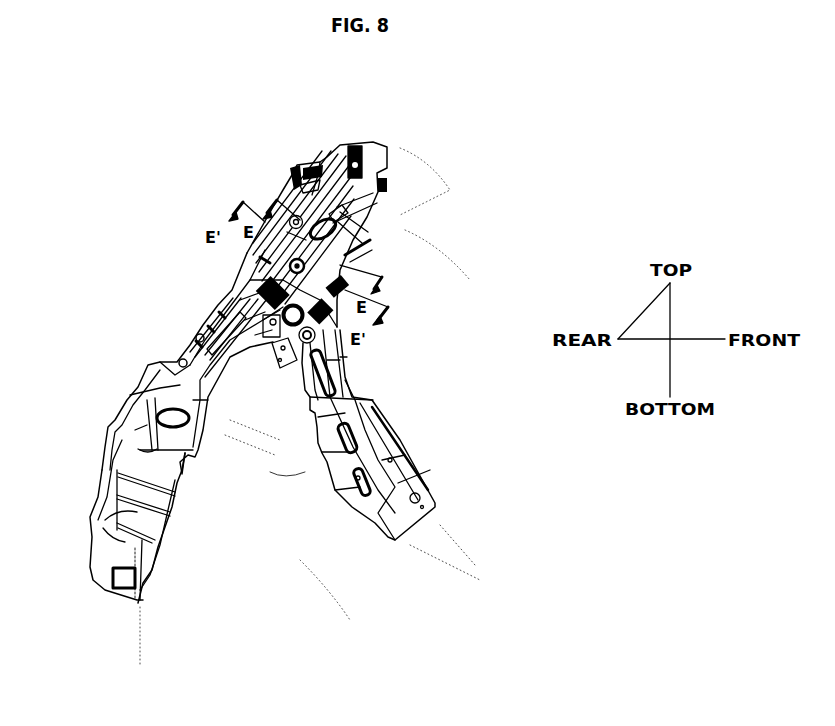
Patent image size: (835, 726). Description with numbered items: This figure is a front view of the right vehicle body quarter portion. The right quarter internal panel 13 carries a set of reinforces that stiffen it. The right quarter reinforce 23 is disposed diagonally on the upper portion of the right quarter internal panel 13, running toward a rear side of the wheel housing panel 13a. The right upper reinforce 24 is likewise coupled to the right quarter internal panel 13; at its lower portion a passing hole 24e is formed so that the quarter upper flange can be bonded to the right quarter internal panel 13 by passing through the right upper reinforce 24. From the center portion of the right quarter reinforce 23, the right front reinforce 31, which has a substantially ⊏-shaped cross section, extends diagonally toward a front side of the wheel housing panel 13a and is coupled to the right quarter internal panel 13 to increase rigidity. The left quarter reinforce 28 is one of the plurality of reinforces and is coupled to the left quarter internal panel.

The right quarter internal panel 13 is at (462, 174).
The wheel housing panel 13a is at (290, 470).
The right quarter reinforce 23 is at (182, 345).
The right upper reinforce 24 is at (347, 188).
The passing hole 24e is at (373, 243).
The left quarter reinforce 28 is at (88, 550).
The right front reinforce 31 is at (380, 430).